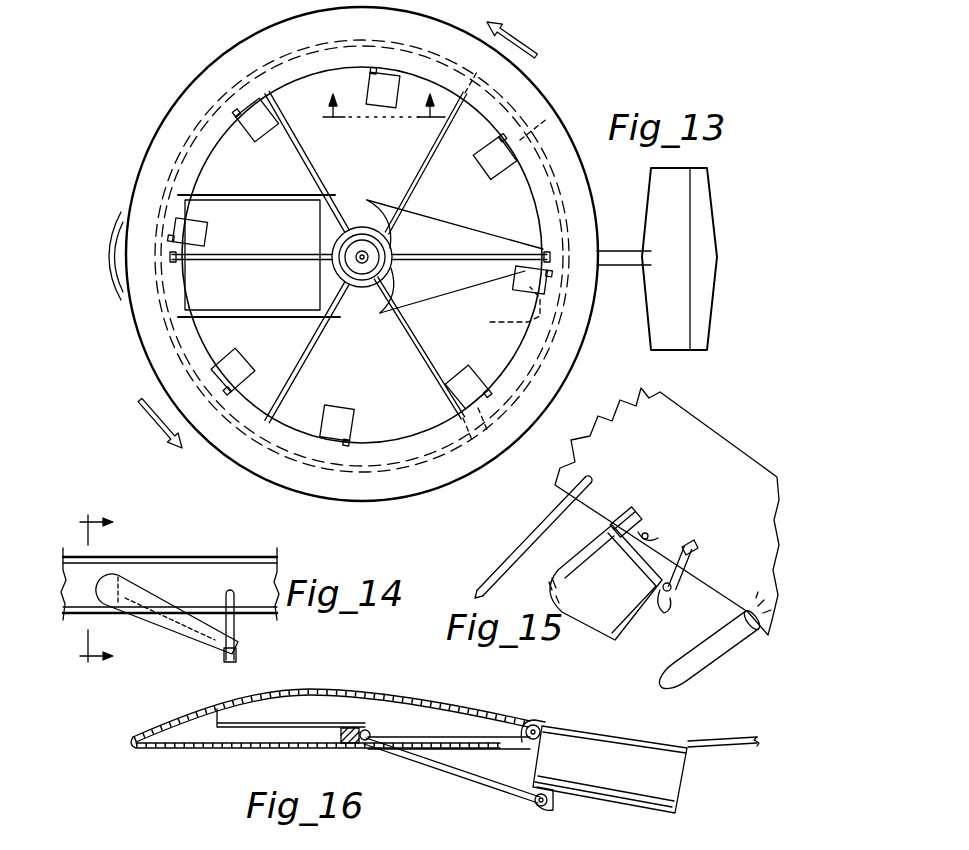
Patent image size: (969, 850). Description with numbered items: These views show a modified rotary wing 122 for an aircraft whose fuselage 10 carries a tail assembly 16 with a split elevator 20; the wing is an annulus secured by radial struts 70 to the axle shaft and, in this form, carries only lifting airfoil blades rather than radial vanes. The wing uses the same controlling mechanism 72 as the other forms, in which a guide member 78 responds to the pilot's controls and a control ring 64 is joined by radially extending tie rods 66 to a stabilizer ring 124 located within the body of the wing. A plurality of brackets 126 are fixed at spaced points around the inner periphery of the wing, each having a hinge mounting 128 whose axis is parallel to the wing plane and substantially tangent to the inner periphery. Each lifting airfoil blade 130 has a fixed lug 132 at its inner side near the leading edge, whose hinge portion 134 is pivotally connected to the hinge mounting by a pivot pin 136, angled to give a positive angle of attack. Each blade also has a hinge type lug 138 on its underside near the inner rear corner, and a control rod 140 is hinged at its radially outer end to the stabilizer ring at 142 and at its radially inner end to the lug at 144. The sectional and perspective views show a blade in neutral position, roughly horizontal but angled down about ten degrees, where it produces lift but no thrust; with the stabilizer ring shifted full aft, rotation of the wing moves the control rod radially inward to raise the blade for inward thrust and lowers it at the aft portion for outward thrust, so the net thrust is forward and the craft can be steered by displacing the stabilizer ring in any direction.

In FIG. 13, the fuselage 10 is at (113, 247).
In FIG. 13, the tail assembly 16 is at (616, 270).
In FIG. 13, the split elevator 20 is at (705, 316).
In FIG. 13, the control ring 64 is at (395, 262).
In FIG. 13, the tie rods 66 is at (276, 252).
In FIG. 15, the tie rods 66 is at (542, 532).
In FIG. 16, the tie rods 66 is at (718, 748).
In FIG. 13, the radial struts 70 is at (322, 173).
In FIG. 15, the radial struts 70 is at (756, 650).
In FIG. 13, the controlling mechanism 72 is at (366, 293).
In FIG. 13, the guide member 78 is at (352, 262).
In FIG. 13, the rotary wing 122 is at (140, 342).
In FIG. 14, the rotary wing 122 is at (157, 562).
In FIG. 15, the rotary wing 122 is at (713, 443).
In FIG. 16, the rotary wing 122 is at (128, 741).
In FIG. 13, the stabilizer ring 124 is at (493, 312).
In FIG. 16, the stabilizer ring 124 is at (337, 737).
In FIG. 13, the brackets 126 is at (502, 145).
In FIG. 14, the brackets 126 is at (150, 574).
In FIG. 15, the brackets 126 is at (623, 500).
In FIG. 15, the hinge mounting 128 is at (640, 508).
In FIG. 13, the lifting airfoil blade 130 is at (202, 220).
In FIG. 14, the lifting airfoil blade 130 is at (167, 628).
In FIG. 15, the lifting airfoil blade 130 is at (585, 617).
In FIG. 16, the lifting airfoil blade 130 is at (630, 745).
In FIG. 14, the fixed lug 132 is at (104, 600).
In FIG. 15, the fixed lug 132 is at (650, 540).
In FIG. 16, the fixed lug 132 is at (570, 728).
In FIG. 15, the hinge portion 134 is at (647, 512).
In FIG. 15, the pivot pin 136 is at (648, 532).
In FIG. 16, the pivot pin 136 is at (530, 725).
In FIG. 14, the hinge type lug 138 is at (240, 657).
In FIG. 15, the hinge type lug 138 is at (663, 587).
In FIG. 16, the hinge type lug 138 is at (552, 790).
In FIG. 14, the control rod 140 is at (232, 592).
In FIG. 15, the control rod 140 is at (667, 598).
In FIG. 16, the control rod 140 is at (413, 757).
In FIG. 13, the hinged connection to stabilizer ring 142 is at (556, 123).
In FIG. 16, the hinged connection to stabilizer ring 142 is at (366, 732).
In FIG. 13, the hinged connection to lug 144 is at (522, 170).
In FIG. 14, the hinged connection to lug 144 is at (225, 659).
In FIG. 15, the hinged connection to lug 144 is at (625, 645).
In FIG. 16, the hinged connection to lug 144 is at (528, 724).